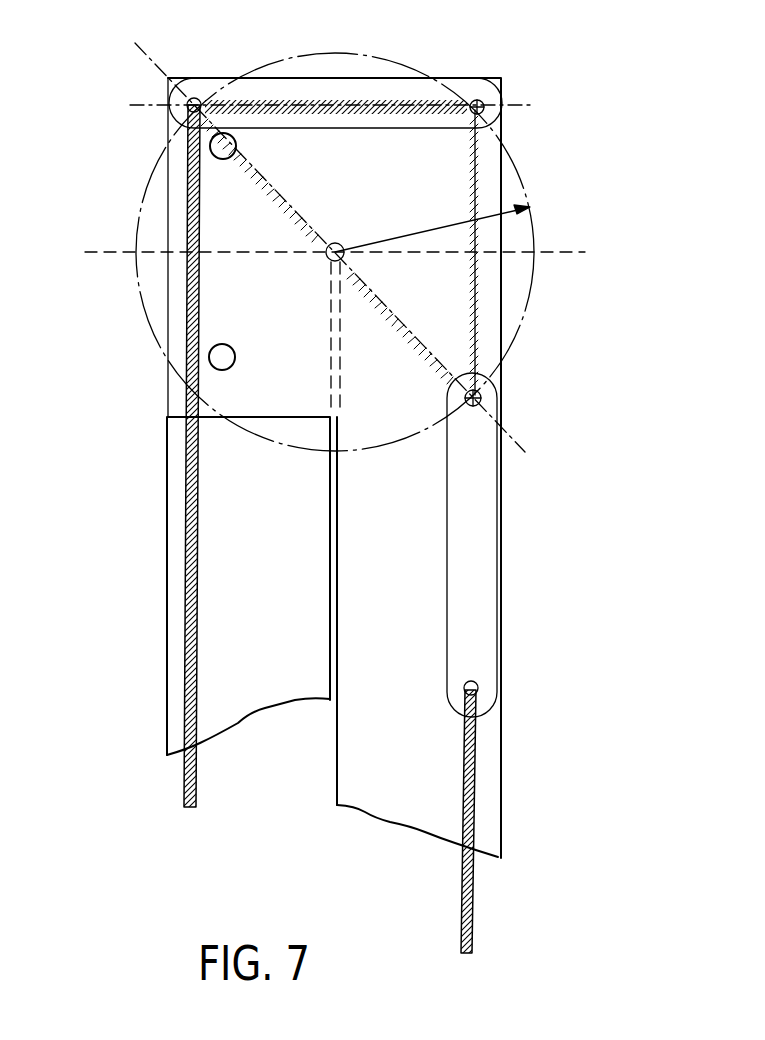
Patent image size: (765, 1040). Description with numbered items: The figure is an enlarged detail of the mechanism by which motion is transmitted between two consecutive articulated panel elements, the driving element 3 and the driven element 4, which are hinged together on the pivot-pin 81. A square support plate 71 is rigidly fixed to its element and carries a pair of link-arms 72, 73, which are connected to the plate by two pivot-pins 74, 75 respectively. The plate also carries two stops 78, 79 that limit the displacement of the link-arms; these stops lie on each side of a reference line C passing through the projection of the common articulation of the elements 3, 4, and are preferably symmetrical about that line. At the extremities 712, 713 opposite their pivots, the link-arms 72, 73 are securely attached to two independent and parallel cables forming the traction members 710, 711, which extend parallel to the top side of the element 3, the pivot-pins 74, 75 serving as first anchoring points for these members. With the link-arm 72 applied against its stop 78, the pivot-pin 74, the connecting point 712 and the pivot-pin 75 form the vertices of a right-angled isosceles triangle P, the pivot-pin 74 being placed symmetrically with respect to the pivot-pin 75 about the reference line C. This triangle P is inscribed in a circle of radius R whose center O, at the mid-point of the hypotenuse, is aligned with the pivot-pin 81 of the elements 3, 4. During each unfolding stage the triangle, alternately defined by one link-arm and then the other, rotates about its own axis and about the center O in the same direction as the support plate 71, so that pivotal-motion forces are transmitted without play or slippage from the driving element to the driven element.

The support plate 71 is at (495, 176).
The link-arm 72 is at (300, 82).
The link-arm 73 is at (484, 508).
The pivot-pin 74 is at (478, 100).
The pivot-pin 75 is at (483, 398).
The stop 78 is at (216, 150).
The stop 79 is at (216, 360).
The traction member 710 is at (188, 775).
The traction member 711 is at (476, 905).
The extremity of link-arm 712 is at (194, 98).
The extremity of link-arm 713 is at (478, 684).
The pivot-pin 81 is at (333, 243).
The driving element 3 is at (240, 718).
The driven element 4 is at (399, 810).
The center O is at (326, 255).
The radius R is at (432, 226).
The reference line C is at (555, 253).
The right-angled isosceles triangle P is at (475, 280).